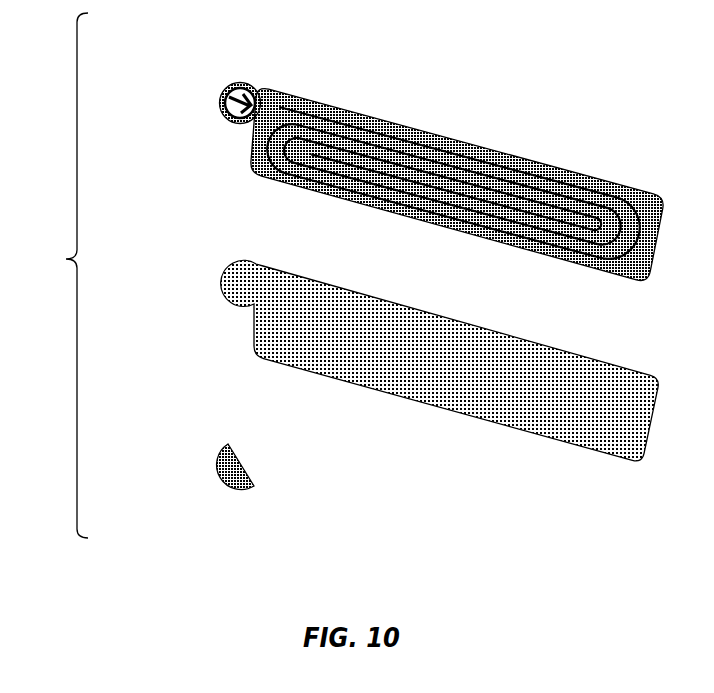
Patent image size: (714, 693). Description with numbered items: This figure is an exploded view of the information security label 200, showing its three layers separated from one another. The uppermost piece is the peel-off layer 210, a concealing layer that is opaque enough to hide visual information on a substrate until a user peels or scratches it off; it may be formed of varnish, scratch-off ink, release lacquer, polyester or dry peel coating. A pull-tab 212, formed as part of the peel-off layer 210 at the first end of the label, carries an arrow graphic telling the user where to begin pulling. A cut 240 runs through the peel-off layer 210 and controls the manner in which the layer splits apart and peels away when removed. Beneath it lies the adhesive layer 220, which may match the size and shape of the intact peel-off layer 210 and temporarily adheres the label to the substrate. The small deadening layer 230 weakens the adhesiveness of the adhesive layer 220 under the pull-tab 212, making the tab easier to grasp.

The information security label 200 is at (57, 275).
The peel-off layer 210 is at (251, 153).
The pull-tab 212 is at (238, 85).
The adhesive layer 220 is at (251, 336).
The deadening layer 230 is at (224, 470).
The cut 240 is at (598, 191).